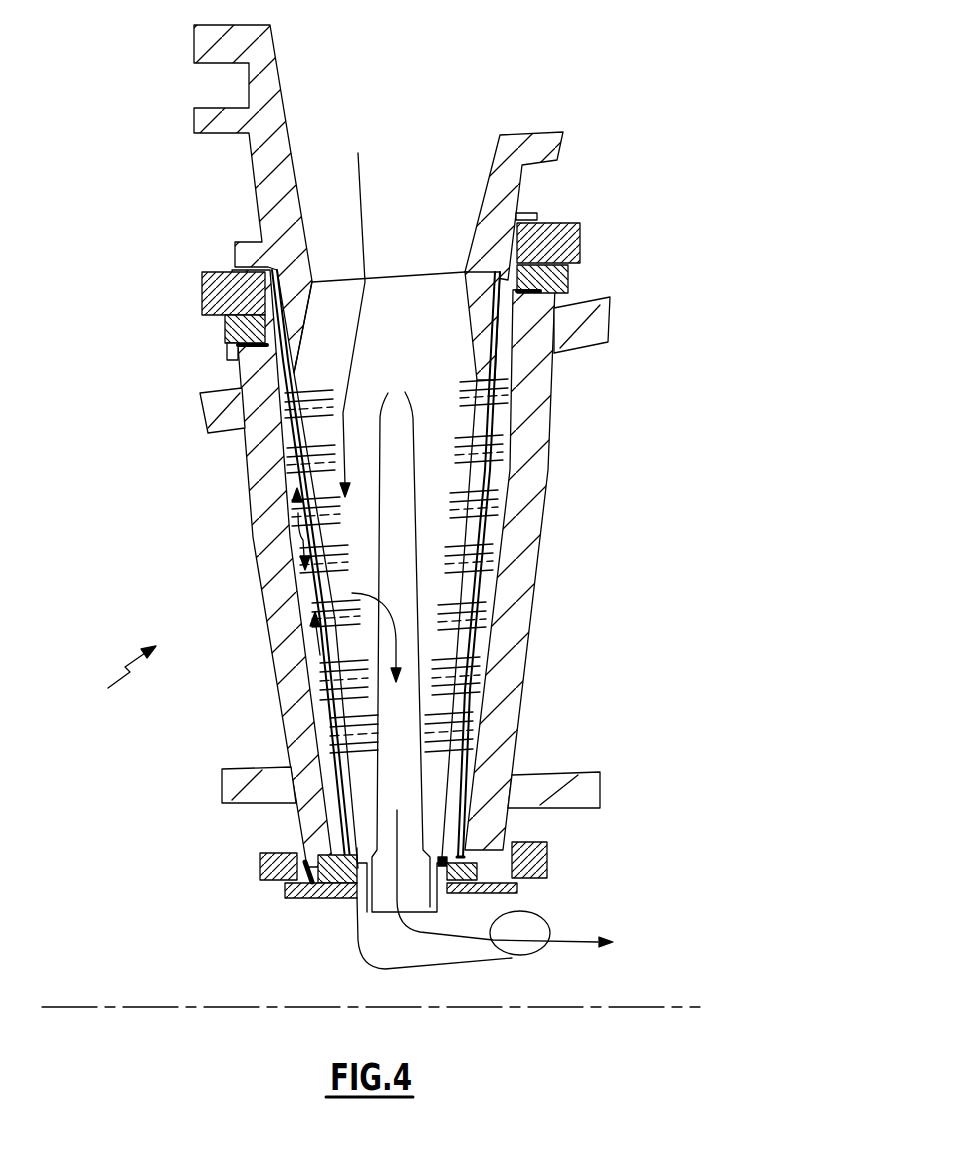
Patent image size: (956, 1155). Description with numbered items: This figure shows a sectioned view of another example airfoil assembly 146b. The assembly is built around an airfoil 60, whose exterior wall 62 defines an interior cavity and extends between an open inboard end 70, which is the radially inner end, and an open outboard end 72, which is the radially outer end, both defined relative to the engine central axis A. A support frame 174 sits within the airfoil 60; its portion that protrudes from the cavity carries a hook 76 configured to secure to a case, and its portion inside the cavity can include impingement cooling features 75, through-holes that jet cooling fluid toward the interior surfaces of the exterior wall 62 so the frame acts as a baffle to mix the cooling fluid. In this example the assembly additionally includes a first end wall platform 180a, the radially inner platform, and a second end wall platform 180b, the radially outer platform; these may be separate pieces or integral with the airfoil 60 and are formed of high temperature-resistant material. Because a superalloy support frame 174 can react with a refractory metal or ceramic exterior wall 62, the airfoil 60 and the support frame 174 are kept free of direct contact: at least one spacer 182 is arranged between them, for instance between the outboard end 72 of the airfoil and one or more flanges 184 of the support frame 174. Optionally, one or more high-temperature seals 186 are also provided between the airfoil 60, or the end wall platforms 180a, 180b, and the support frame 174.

The airfoil 60 is at (268, 631).
The exterior wall 62 is at (535, 607).
The open inboard end 70 is at (310, 873).
The open outboard end 72 is at (508, 291).
The impingement cooling features 75 is at (320, 607).
The hook 76 is at (196, 83).
The airfoil assembly 146b is at (101, 677).
The support frame 174 is at (487, 488).
The first end wall platform 180a is at (560, 772).
The second end wall platform 180b is at (592, 343).
The spacer 182 is at (202, 292).
The flange 184 is at (248, 242).
The high-temperature seal 186 is at (225, 340).
The engine central axis A is at (658, 1006).